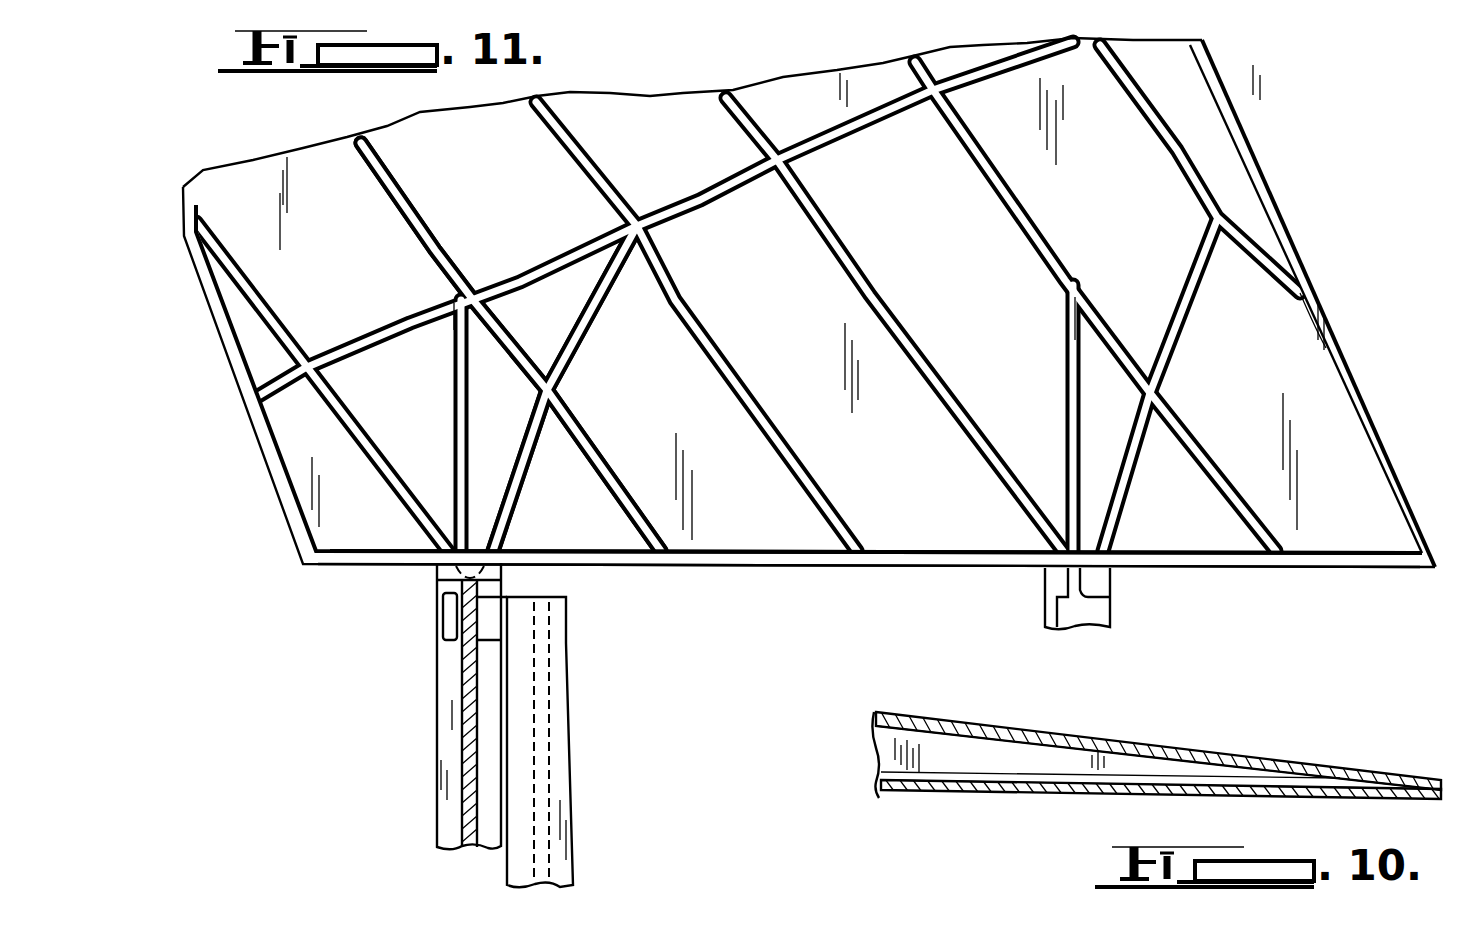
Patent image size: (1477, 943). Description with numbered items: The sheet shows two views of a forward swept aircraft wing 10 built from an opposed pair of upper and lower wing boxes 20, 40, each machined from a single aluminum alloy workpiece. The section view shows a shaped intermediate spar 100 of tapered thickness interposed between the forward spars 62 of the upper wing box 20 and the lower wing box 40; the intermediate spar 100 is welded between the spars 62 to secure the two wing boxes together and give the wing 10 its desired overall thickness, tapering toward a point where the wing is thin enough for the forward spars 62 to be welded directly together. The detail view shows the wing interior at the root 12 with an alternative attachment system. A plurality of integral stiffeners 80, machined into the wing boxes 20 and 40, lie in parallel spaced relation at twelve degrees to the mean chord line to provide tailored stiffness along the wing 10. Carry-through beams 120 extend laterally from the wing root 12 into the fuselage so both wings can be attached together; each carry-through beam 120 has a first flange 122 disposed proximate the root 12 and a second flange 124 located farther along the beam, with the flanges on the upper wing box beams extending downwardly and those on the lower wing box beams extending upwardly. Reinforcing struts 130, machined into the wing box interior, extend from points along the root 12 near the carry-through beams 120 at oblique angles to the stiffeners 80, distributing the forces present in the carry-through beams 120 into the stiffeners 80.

In FIG. 11, the forward swept aircraft wing 10 is at (1140, 212).
In FIG. 11, the root 12 is at (947, 566).
In FIG. 11, the integral stiffeners 80 is at (412, 228).
In FIG. 11, the reinforcing struts 130 is at (543, 408).
In FIG. 11, the carry-through beams 120 is at (1112, 584).
In FIG. 11, the first flange 122 is at (485, 640).
In FIG. 11, the second flange 124 is at (570, 620).
In FIG. 10, the upper wing box 20 is at (916, 722).
In FIG. 10, the lower wing box 40 is at (904, 798).
In FIG. 10, the intermediate spars 100 is at (993, 760).
In FIG. 10, the forward spars 62 is at (1240, 767).